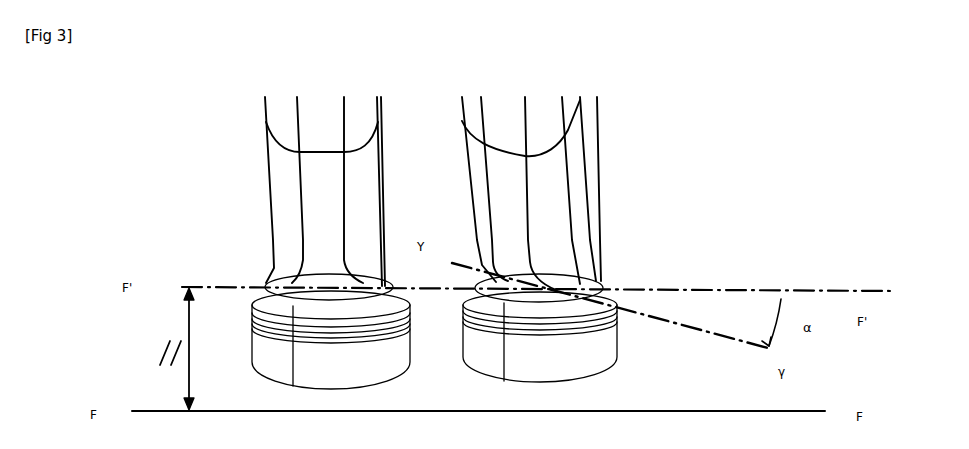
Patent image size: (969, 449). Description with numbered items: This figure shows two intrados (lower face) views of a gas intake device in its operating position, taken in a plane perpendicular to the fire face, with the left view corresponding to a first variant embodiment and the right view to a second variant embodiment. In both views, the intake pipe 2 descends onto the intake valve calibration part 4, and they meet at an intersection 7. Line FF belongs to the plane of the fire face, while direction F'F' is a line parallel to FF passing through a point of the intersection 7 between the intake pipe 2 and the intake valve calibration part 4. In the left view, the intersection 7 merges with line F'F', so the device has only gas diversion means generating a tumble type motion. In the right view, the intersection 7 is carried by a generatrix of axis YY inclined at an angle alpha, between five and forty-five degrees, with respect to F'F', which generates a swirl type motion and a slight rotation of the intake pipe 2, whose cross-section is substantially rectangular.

The intake pipe 2 is at (282, 125).
The intersection 7 is at (273, 275).
The intake valve calibration part 4 is at (260, 337).